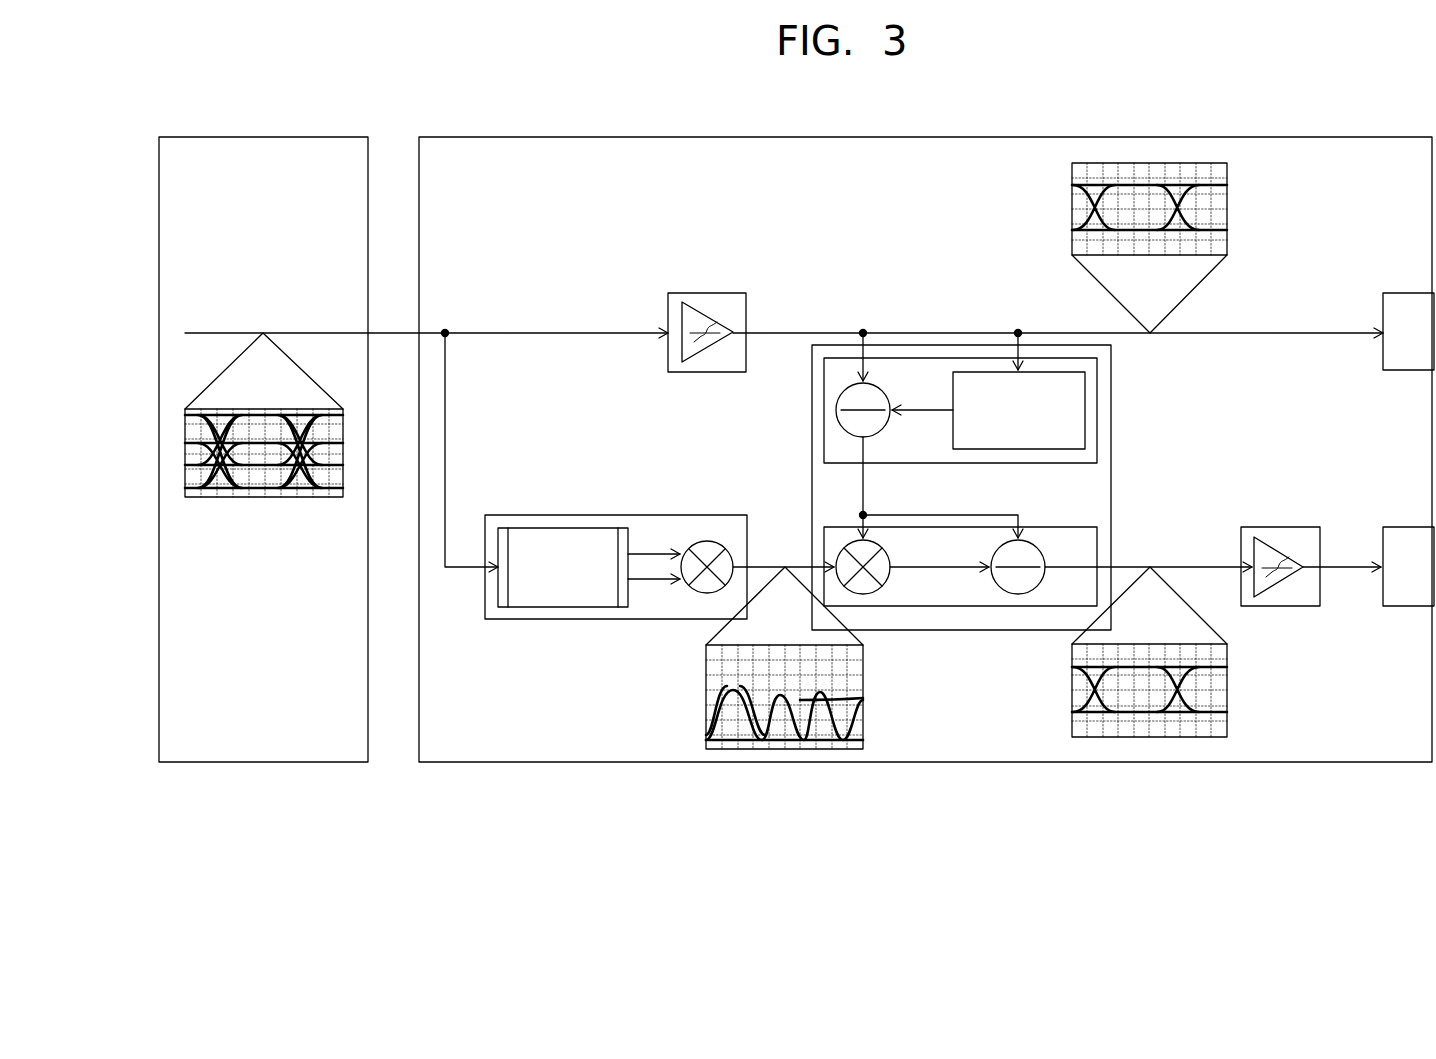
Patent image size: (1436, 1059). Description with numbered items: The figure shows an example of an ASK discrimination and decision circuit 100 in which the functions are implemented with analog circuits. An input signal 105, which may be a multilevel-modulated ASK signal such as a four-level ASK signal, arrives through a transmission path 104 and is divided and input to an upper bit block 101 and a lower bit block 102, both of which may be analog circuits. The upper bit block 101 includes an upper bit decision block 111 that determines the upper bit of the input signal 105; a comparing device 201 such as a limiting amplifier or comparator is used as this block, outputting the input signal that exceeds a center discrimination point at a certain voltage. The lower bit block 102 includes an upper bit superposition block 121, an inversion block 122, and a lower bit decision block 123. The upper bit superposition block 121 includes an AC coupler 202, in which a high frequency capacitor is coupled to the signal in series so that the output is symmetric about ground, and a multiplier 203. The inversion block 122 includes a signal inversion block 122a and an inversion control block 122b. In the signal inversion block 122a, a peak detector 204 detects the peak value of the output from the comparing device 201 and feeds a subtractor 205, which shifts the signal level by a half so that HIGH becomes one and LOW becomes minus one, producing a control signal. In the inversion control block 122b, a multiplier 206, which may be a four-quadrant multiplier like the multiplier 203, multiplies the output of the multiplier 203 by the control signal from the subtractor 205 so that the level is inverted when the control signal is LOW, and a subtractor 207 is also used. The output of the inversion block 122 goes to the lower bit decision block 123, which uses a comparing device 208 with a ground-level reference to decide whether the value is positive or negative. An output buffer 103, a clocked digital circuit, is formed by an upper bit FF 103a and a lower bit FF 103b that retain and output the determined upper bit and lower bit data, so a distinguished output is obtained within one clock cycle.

The ASK discrimination and decision circuit 100 is at (927, 137).
The upper bit block 101 is at (672, 262).
The lower bit block 102 is at (950, 677).
The output buffer 103 is at (1412, 283).
The upper bit FF 103a is at (1408, 370).
The lower bit FF 103b is at (1408, 606).
The transmission path 104 is at (263, 137).
The input signal 105 is at (238, 327).
The upper bit decision block 111 is at (728, 333).
The upper bit superposition block 121 is at (617, 570).
The inversion block 122 is at (1008, 511).
The signal inversion block 122a is at (1005, 434).
The inversion control block 122b is at (1014, 595).
The lower bit decision block 123 is at (1285, 569).
The comparing device 201 is at (705, 352).
The AC coupler 202 is at (565, 528).
The multiplier 203 is at (707, 541).
The peak detector 204 is at (1085, 405).
The subtractor 205 is at (880, 432).
The multiplier 206 is at (863, 597).
The subtractor 207 is at (1018, 597).
The comparing device 208 is at (1280, 592).